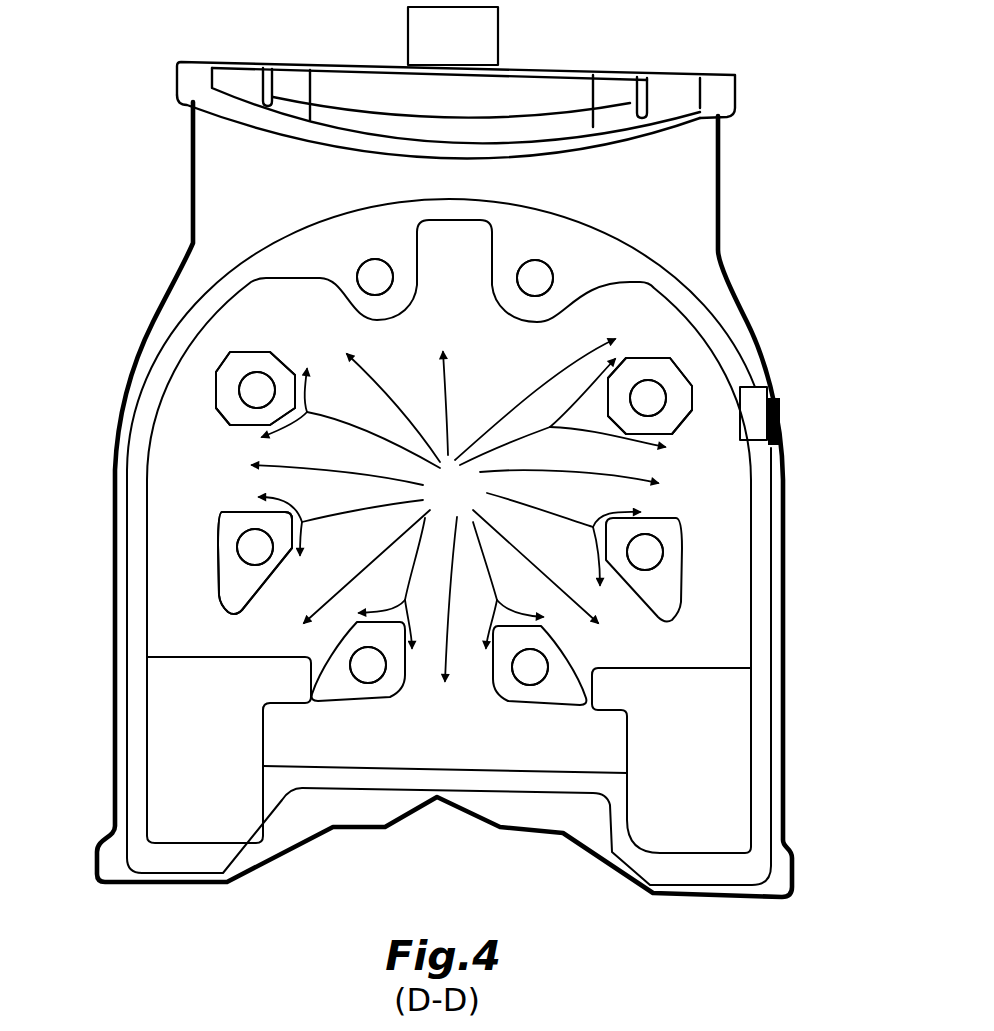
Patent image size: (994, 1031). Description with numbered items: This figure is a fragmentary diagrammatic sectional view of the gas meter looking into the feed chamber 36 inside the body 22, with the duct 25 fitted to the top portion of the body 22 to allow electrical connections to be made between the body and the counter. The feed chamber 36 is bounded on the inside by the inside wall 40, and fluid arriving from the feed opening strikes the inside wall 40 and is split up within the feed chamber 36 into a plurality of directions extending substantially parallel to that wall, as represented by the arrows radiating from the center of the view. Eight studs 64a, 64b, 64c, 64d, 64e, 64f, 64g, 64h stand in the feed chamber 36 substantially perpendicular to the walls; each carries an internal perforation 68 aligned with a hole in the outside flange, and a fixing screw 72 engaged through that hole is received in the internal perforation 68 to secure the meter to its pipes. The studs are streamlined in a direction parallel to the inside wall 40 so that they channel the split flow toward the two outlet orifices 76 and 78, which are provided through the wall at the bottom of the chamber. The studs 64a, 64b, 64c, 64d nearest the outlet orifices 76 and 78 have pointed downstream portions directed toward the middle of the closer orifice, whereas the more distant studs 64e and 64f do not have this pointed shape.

The body 22 is at (113, 568).
The duct 25 is at (500, 33).
The feed chamber 36 is at (300, 337).
The inside wall 40 is at (722, 508).
The stud 64a is at (357, 692).
The stud 64b is at (543, 723).
The stud 64c is at (237, 580).
The stud 64d is at (667, 572).
The stud 64e is at (227, 387).
The stud 64f is at (642, 413).
The stud 64g is at (343, 270).
The stud 64h is at (563, 283).
The internal perforation 68 is at (240, 377).
The screw 72 is at (373, 273).
The outlet orifice 76 is at (673, 820).
The outlet orifice 78 is at (230, 811).